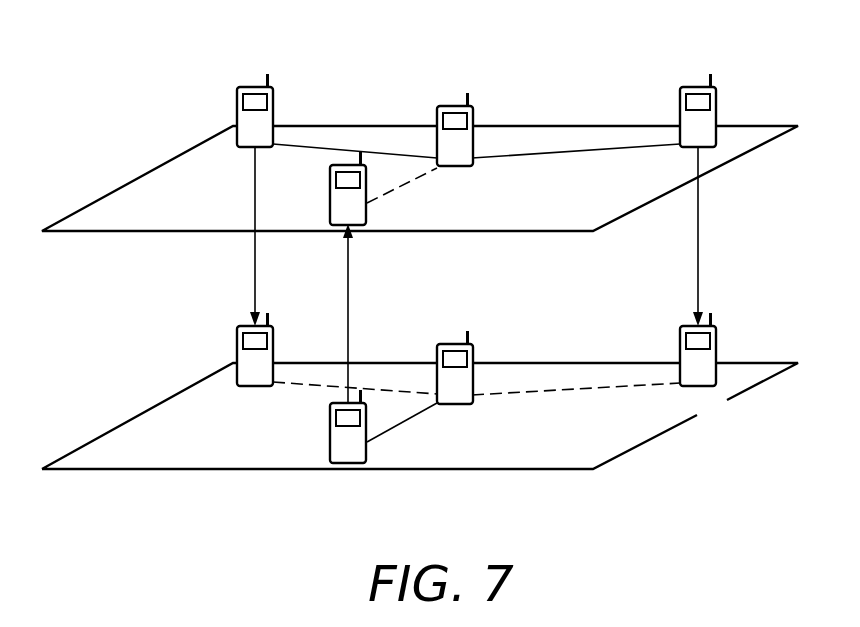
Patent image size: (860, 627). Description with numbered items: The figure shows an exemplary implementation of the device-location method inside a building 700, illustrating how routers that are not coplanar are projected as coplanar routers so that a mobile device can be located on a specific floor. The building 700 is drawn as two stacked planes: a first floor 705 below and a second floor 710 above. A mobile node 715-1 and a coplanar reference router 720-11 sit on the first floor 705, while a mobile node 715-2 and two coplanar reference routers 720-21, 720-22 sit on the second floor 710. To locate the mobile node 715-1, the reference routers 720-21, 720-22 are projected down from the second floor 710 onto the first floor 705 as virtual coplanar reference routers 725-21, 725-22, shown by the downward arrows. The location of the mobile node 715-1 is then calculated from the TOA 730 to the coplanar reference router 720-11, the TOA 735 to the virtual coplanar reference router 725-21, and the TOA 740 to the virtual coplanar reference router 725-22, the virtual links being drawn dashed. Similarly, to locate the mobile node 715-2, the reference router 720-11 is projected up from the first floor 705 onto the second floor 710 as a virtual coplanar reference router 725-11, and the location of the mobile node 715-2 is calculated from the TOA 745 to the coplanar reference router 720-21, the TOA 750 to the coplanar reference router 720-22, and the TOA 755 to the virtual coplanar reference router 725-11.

The building 700 is at (108, 63).
The first floor 705 is at (148, 413).
The second floor 710 is at (148, 173).
The mobile node 715-1 is at (471, 403).
The mobile node 715-2 is at (471, 165).
The coplanar reference router 720-11 is at (328, 432).
The coplanar reference router 720-21 is at (246, 84).
The coplanar reference router 720-22 is at (714, 84).
The virtual coplanar reference router 725-11 is at (328, 198).
The virtual coplanar reference router 725-21 is at (248, 324).
The virtual coplanar reference router 725-22 is at (714, 324).
The TOA 730 is at (393, 433).
The TOA 735 is at (308, 382).
The TOA 740 is at (568, 396).
The TOA 745 is at (308, 143).
The TOA 750 is at (568, 157).
The TOA 755 is at (393, 195).